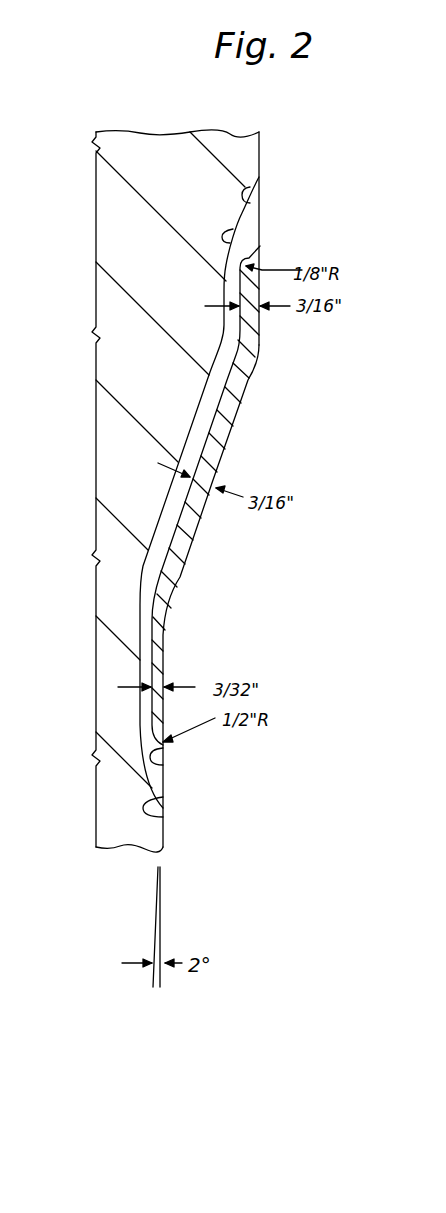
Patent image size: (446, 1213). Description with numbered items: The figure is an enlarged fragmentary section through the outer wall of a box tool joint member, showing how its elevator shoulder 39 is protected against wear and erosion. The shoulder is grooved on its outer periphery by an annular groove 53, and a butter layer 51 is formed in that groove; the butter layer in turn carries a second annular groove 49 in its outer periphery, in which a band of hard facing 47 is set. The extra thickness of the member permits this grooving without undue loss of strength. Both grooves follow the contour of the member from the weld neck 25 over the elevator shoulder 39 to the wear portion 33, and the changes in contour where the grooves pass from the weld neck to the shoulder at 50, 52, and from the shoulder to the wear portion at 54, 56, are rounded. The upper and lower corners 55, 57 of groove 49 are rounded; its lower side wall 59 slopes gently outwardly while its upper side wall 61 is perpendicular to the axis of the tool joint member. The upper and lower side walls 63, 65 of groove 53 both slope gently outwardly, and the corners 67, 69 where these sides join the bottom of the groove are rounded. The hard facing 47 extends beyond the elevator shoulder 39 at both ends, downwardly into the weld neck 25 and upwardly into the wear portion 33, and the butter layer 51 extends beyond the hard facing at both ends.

The weld neck 25 is at (115, 825).
The wear portion 33 is at (178, 263).
The elevator shoulder 39 is at (133, 483).
The hard facing 47 is at (213, 437).
The annular groove 49 is at (217, 411).
The change in contour of groove 49 from weld neck to shoulder 50 is at (143, 572).
The butter layer 51 is at (212, 388).
The change in contour of groove 53 from weld neck to shoulder 52 is at (175, 575).
The annular groove 53 is at (188, 437).
The change in contour of groove 49 from shoulder to wear portion 54 is at (235, 336).
The upper corner of groove 49 55 is at (237, 262).
The change in contour of groove 53 from shoulder to wear portion 56 is at (262, 347).
The lower corner of groove 49 57 is at (140, 726).
The lower side wall of groove 49 59 is at (163, 765).
The upper side wall of groove 49 61 is at (249, 258).
The upper side wall of groove 53 63 is at (262, 176).
The lower side wall of groove 53 65 is at (162, 823).
The upper corner of groove 53 67 is at (233, 237).
The lower corner of groove 53 69 is at (145, 765).